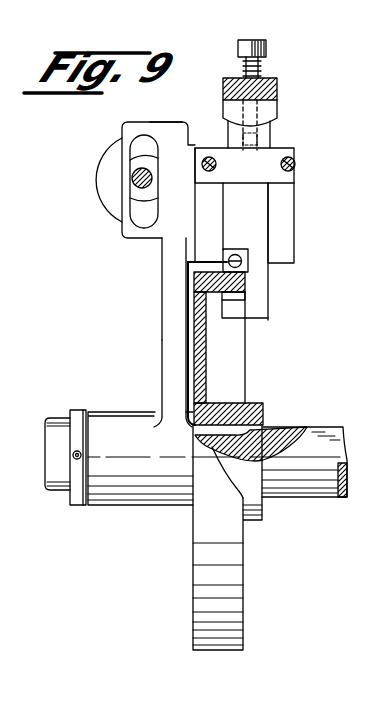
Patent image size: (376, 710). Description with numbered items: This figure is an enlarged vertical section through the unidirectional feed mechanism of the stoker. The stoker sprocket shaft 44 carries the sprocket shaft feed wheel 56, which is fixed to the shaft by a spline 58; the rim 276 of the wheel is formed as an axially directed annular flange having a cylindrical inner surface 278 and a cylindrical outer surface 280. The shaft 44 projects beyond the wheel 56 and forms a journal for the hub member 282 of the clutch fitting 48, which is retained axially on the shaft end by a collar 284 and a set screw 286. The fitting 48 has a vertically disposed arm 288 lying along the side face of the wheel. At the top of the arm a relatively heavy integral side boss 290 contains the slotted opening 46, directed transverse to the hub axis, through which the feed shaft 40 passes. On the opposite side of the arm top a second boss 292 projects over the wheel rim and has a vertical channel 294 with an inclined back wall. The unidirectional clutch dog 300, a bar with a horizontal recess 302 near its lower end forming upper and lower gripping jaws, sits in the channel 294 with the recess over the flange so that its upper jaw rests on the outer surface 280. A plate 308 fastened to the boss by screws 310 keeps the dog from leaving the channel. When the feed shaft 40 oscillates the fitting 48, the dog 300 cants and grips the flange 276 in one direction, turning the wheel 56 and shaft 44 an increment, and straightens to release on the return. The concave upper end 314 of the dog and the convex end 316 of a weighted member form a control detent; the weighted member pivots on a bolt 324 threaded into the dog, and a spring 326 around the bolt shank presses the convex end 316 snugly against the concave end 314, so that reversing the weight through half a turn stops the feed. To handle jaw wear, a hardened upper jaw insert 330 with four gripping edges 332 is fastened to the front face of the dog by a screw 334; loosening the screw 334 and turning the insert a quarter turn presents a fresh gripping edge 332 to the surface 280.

The feed shaft 40 is at (132, 186).
The stoker sprocket shaft 44 is at (322, 430).
The slotted opening 46 is at (135, 220).
The clutch fitting 48 is at (162, 302).
The sprocket shaft feed wheel 56 is at (232, 577).
The spline 58 is at (254, 426).
The rim 276 is at (252, 275).
The inner cylindrical surface 278 is at (216, 300).
The outer cylindrical surface 280 is at (205, 260).
The hub member 282 is at (128, 490).
The collar 284 is at (78, 507).
The set screw 286 is at (77, 451).
The arm 288 is at (162, 368).
The side boss 290 is at (170, 132).
The second boss 292 is at (285, 201).
The vertical channel 294 is at (262, 216).
The unidirectional clutch dog 300 is at (262, 306).
The horizontal recess 302 is at (246, 288).
The plate 308 is at (275, 154).
The screws 310 is at (295, 164).
The upper end of dog 314 is at (270, 124).
The convex end 316 is at (228, 124).
The bolt 324 is at (262, 41).
The spring 326 is at (265, 68).
The upper jaw insert 330 is at (208, 262).
The gripping edges 332 is at (252, 252).
The screw 334 is at (248, 263).